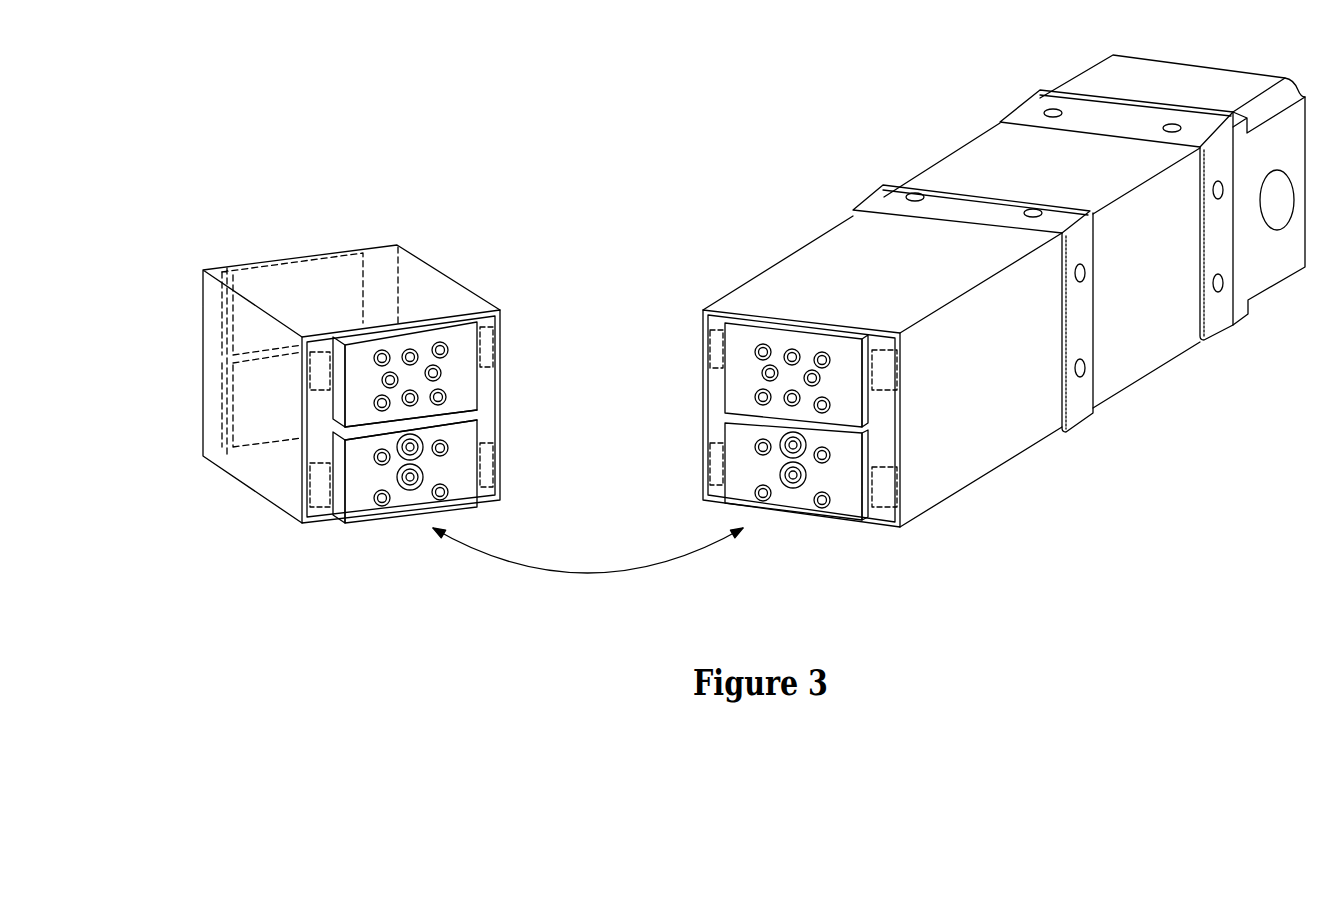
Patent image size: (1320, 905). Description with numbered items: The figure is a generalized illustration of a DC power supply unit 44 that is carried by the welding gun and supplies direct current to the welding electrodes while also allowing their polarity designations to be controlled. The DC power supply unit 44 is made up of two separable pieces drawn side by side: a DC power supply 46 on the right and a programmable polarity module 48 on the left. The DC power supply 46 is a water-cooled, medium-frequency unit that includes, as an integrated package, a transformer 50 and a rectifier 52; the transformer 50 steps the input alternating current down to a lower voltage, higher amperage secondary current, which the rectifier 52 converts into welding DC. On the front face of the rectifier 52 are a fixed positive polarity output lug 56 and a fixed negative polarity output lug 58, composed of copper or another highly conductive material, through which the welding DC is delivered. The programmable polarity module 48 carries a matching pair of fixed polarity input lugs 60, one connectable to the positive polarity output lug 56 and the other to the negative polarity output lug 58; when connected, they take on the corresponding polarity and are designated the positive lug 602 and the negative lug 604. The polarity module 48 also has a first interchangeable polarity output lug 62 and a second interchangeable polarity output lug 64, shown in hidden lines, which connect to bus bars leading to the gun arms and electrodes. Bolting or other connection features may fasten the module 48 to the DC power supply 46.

The DC power supply unit 44 is at (680, 116).
The DC power supply 46 is at (842, 146).
The programmable polarity module 48 is at (455, 258).
The transformer 50 is at (975, 165).
The rectifier 52 is at (800, 278).
The fixed positive polarity output lug 56 is at (737, 352).
The fixed negative polarity output lug 58 is at (737, 463).
The fixed polarity input lugs 60 is at (485, 430).
The positive lug 602 is at (465, 353).
The negative lug 604 is at (472, 468).
The first interchangeable polarity output lug 62 is at (250, 320).
The second interchangeable polarity output lug 64 is at (250, 407).